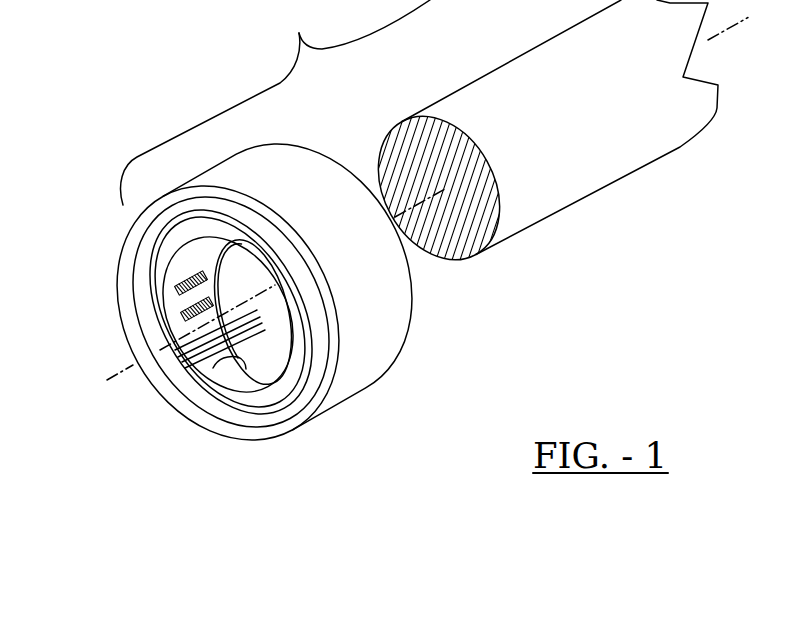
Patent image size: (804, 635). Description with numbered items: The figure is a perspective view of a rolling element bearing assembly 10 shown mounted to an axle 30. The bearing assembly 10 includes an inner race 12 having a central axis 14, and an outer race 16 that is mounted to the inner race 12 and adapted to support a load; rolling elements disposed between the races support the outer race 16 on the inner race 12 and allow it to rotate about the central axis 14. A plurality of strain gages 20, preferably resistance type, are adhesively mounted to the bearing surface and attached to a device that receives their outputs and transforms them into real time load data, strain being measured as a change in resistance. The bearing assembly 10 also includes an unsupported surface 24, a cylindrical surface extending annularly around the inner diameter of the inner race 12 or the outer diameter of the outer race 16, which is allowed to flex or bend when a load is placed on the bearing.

The bearing assembly 10 is at (392, 273).
The inner race 12 is at (242, 312).
The central axis 14 is at (120, 372).
The outer race 16 is at (300, 396).
The strain gages 20 is at (183, 320).
The unsupported surface 24 is at (243, 336).
The axle 30 is at (593, 156).